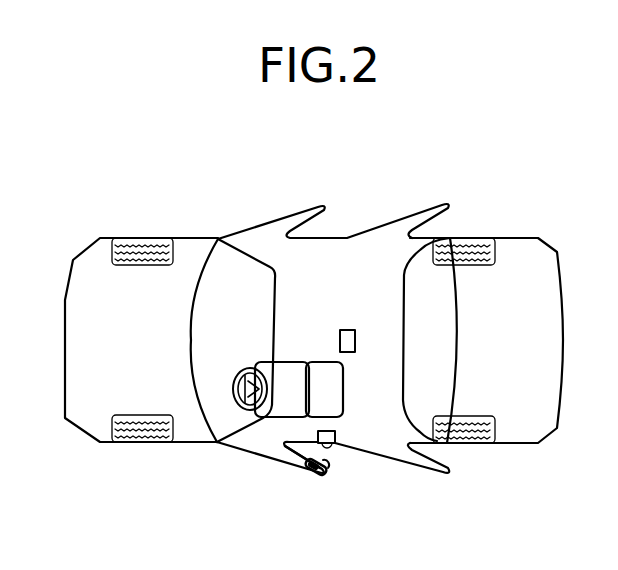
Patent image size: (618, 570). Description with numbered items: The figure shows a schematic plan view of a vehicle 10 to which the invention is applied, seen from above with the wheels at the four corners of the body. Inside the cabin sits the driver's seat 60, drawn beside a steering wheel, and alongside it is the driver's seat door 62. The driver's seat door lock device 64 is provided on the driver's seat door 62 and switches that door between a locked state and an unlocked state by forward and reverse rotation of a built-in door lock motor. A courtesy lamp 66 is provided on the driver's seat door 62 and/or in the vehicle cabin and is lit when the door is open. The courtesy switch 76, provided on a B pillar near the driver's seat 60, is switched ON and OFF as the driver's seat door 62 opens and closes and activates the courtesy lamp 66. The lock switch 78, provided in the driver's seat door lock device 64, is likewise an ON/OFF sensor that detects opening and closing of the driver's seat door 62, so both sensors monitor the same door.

The vehicle 10 is at (357, 158).
The driver's seat 60 is at (298, 338).
The driver's seat door 62 is at (294, 456).
The driver's seat door lock device 64 is at (305, 468).
The courtesy lamp 66 is at (346, 330).
The courtesy switch 76 is at (337, 448).
The lock switch 78 is at (330, 464).